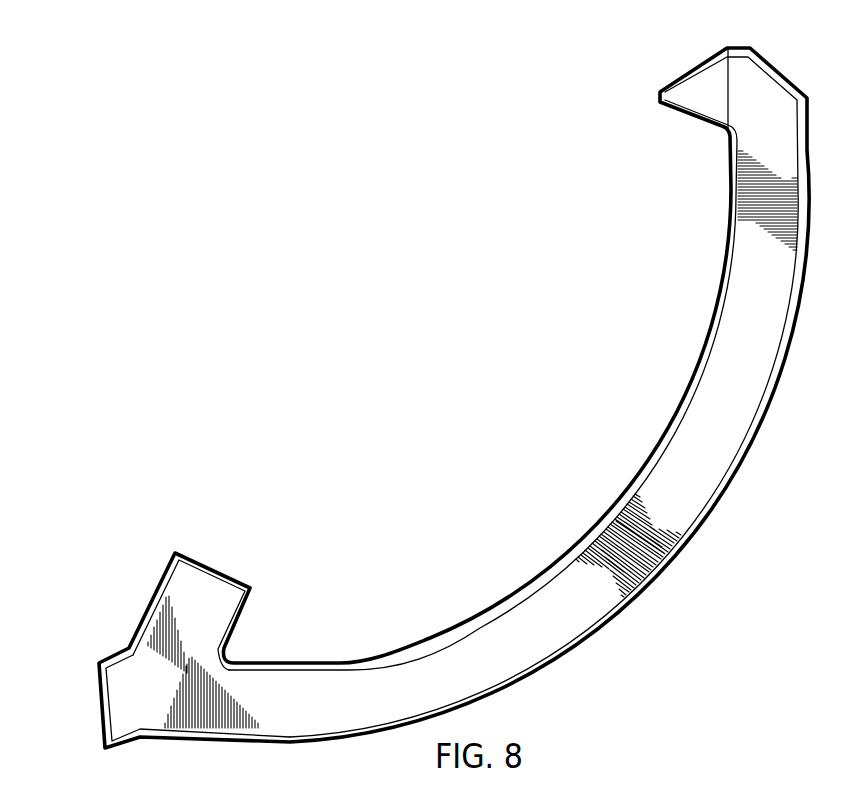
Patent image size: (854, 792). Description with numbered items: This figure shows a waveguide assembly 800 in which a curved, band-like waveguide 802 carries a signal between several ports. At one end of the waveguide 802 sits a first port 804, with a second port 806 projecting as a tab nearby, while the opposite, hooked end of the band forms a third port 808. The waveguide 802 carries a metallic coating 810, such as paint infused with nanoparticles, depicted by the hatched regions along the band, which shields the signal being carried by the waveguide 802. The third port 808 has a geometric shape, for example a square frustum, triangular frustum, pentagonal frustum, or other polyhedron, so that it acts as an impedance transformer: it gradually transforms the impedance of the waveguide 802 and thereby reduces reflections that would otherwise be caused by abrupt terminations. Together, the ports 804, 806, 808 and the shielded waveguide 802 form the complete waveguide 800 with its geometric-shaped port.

The retaining ring 800 is at (707, 634).
The waveguide 802 is at (719, 515).
The first port 804 is at (98, 700).
The second port 806 is at (214, 566).
The third port 808 is at (693, 65).
The metallic coating 810 is at (577, 615).